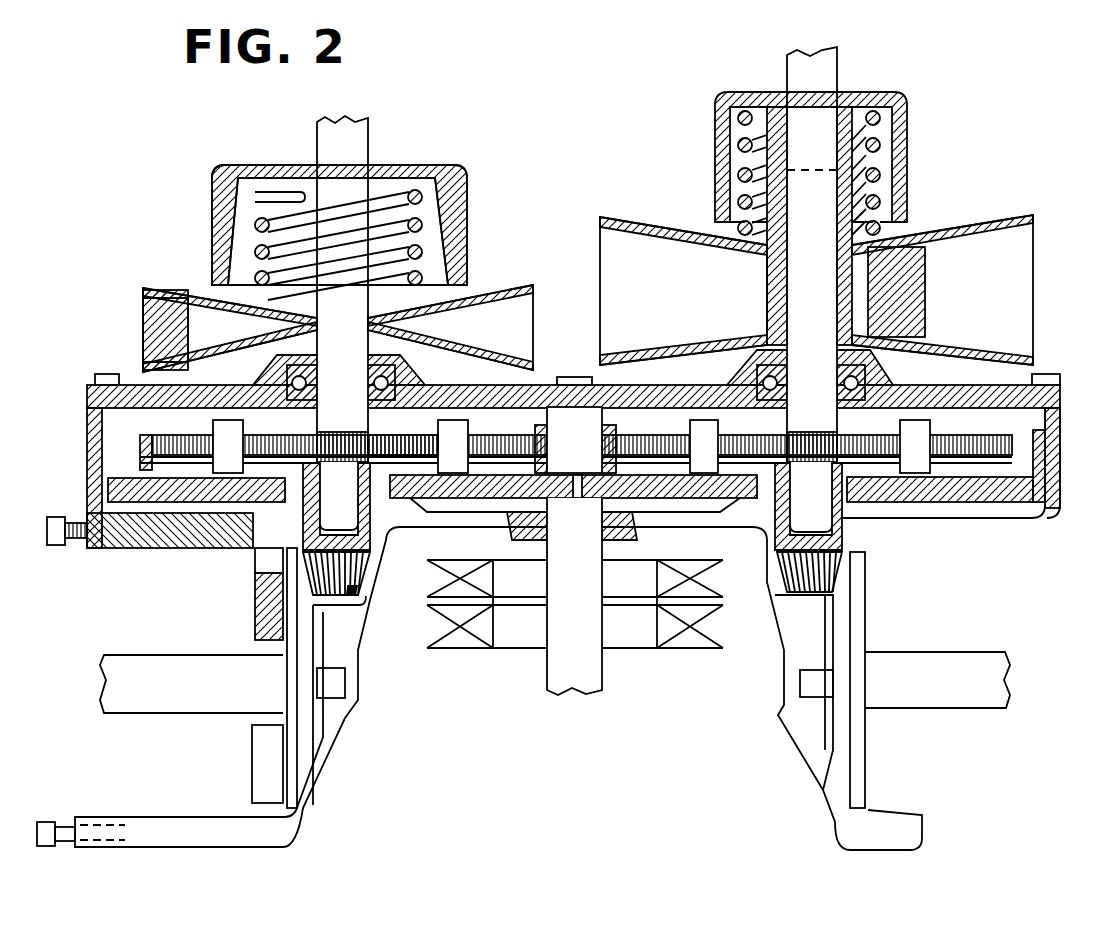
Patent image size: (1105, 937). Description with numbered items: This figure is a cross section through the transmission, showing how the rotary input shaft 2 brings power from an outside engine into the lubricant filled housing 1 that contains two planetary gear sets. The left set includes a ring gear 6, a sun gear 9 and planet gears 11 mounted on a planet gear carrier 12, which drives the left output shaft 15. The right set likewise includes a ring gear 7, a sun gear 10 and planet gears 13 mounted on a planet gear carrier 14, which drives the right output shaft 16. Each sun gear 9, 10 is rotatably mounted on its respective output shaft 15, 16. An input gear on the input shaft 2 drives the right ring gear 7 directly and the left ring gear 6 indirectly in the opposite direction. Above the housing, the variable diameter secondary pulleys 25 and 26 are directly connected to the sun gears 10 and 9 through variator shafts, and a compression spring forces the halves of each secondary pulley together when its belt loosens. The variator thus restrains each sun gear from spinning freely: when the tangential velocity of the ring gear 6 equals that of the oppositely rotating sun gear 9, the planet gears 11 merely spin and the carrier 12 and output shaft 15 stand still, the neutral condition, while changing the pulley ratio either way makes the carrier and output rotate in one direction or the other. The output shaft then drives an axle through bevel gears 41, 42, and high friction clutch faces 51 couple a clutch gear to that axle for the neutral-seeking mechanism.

The housing 1 is at (727, 385).
The rotary input shaft 2 is at (562, 545).
The ring gear 6 is at (140, 455).
The ring gear 7 is at (1010, 465).
The sun gear 9 is at (342, 432).
The sun gear 10 is at (810, 430).
The planet gears 11 is at (410, 446).
The planet gear carrier 12 is at (88, 467).
The planet gears 13 is at (968, 428).
The planet gear carrier 14 is at (872, 470).
The left output shaft 15 is at (372, 546).
The right output shaft 16 is at (853, 548).
The secondary pulley 25 is at (1010, 217).
The secondary pulley 26 is at (468, 303).
The bevel gear 41 is at (356, 590).
The bevel gear 42 is at (323, 735).
The high friction clutch faces 51 is at (270, 783).